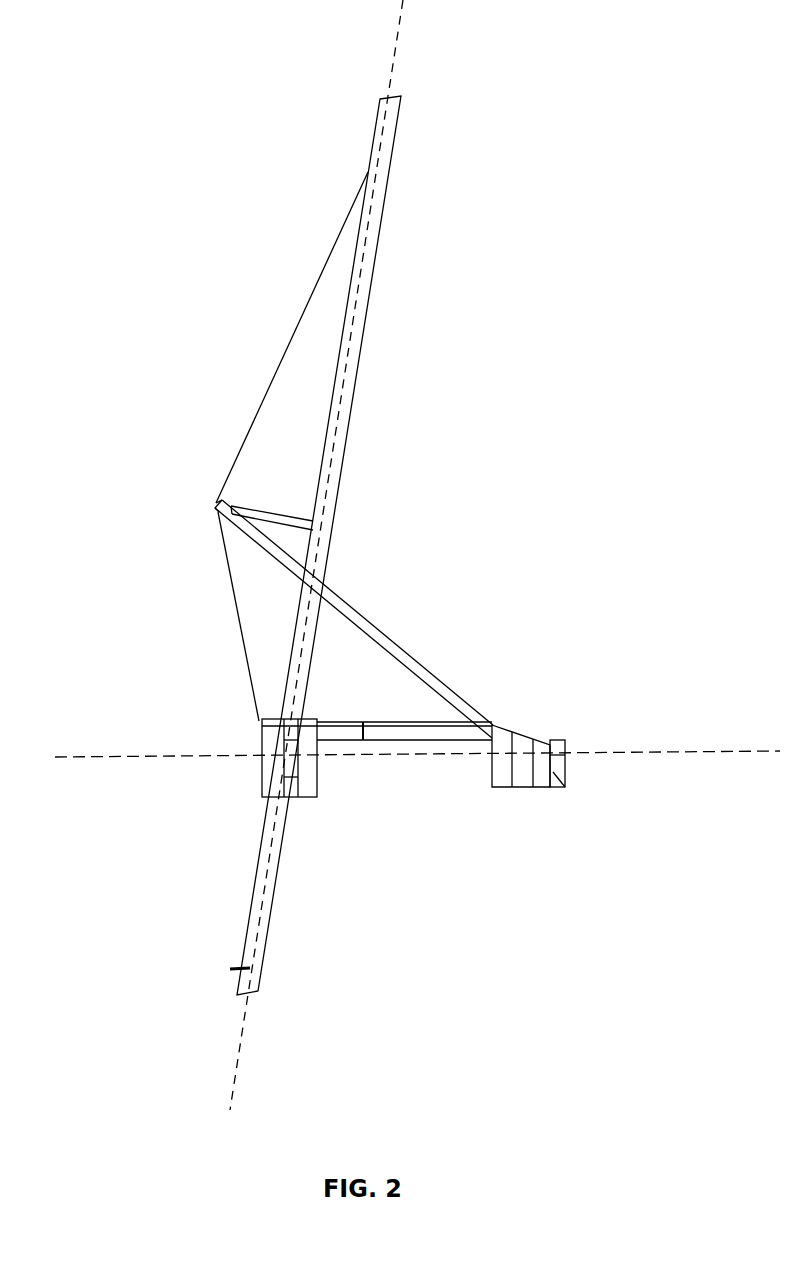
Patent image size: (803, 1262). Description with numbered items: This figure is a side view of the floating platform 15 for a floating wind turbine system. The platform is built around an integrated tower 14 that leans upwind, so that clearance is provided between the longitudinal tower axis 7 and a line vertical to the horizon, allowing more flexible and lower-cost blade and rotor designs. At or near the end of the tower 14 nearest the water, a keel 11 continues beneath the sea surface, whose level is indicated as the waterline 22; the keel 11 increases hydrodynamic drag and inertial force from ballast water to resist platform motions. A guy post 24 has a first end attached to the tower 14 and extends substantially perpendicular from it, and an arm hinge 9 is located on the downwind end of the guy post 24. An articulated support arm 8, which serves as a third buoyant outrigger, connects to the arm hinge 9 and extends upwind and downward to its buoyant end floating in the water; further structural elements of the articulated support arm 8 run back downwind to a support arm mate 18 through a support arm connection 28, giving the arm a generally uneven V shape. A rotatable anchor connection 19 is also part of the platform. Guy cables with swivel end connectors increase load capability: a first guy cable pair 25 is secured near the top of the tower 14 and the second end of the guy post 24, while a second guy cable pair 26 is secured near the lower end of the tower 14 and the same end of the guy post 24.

The longitudinal tower axis 7 is at (415, 35).
The articulated support arm 8 is at (522, 708).
The arm hinge 9 is at (198, 503).
The keel 11 is at (290, 965).
The integrated tower 14 is at (367, 397).
The floating platform 15 is at (446, 509).
The support arm mate 18 is at (343, 712).
The rotatable anchor connection 19 is at (572, 768).
The waterline 22 is at (105, 745).
The guy post 24 is at (288, 505).
The first type of guy cable pair 25 is at (278, 337).
The second type of guy cable pair 26 is at (228, 640).
The support arm connection 28 is at (372, 730).